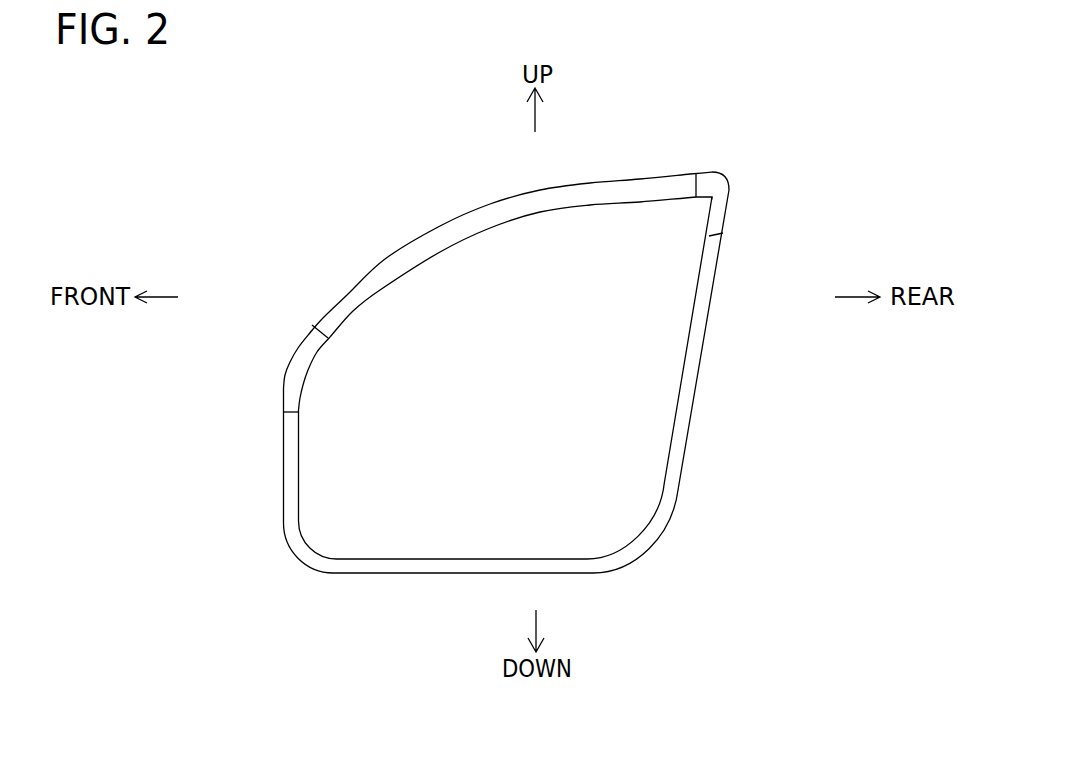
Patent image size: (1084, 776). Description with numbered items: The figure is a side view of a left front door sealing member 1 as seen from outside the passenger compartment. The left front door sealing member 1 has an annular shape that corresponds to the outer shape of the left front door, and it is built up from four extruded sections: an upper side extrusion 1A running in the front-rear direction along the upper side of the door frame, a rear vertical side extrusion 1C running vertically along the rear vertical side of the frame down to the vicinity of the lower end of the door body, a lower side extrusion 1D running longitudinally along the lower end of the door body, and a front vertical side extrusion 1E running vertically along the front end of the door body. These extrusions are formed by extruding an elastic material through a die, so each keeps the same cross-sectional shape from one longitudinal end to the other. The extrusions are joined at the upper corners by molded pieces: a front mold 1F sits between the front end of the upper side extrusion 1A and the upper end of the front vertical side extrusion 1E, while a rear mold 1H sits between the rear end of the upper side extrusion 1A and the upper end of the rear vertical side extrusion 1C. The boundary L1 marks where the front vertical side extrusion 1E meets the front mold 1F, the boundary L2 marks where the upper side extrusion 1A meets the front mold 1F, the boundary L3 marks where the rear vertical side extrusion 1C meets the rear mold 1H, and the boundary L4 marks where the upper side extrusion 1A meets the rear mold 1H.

The left front door sealing member 1 is at (634, 157).
The upper side extrusion 1A is at (385, 258).
The rear vertical side extrusion 1C is at (710, 272).
The lower side extrusion 1D is at (473, 573).
The front vertical side extrusion 1E is at (282, 495).
The front mold 1F is at (300, 356).
The rear mold 1H is at (718, 185).
The boundary between front vertical side extrusion and front mold L1 is at (288, 413).
The boundary between upper side extrusion and front mold L2 is at (322, 324).
The boundary between rear vertical side extrusion and rear mold L3 is at (716, 242).
The boundary between upper side extrusion and rear mold L4 is at (692, 176).